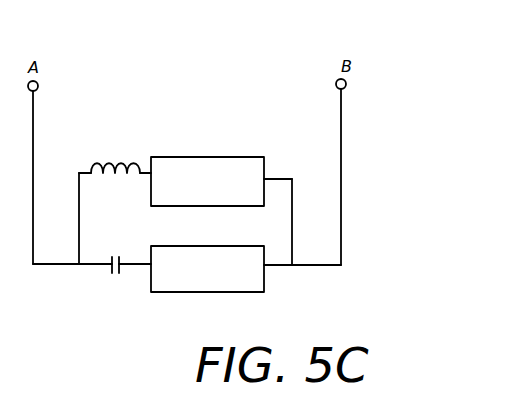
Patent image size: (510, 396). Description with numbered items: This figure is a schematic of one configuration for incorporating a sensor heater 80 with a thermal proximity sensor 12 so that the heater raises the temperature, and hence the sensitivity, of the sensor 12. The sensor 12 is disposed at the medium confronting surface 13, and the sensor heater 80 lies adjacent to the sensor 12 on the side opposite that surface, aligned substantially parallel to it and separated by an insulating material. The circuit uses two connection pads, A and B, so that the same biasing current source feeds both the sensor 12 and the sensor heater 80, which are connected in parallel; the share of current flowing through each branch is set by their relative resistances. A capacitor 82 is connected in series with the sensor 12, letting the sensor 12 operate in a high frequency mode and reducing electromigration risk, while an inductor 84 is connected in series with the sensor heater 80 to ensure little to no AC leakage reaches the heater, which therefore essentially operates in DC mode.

The inductor 84 is at (122, 165).
The sensor heater 80 is at (200, 170).
The capacitor 82 is at (111, 257).
The sensor 12 is at (250, 278).
The medium confronting surface 13 is at (179, 294).